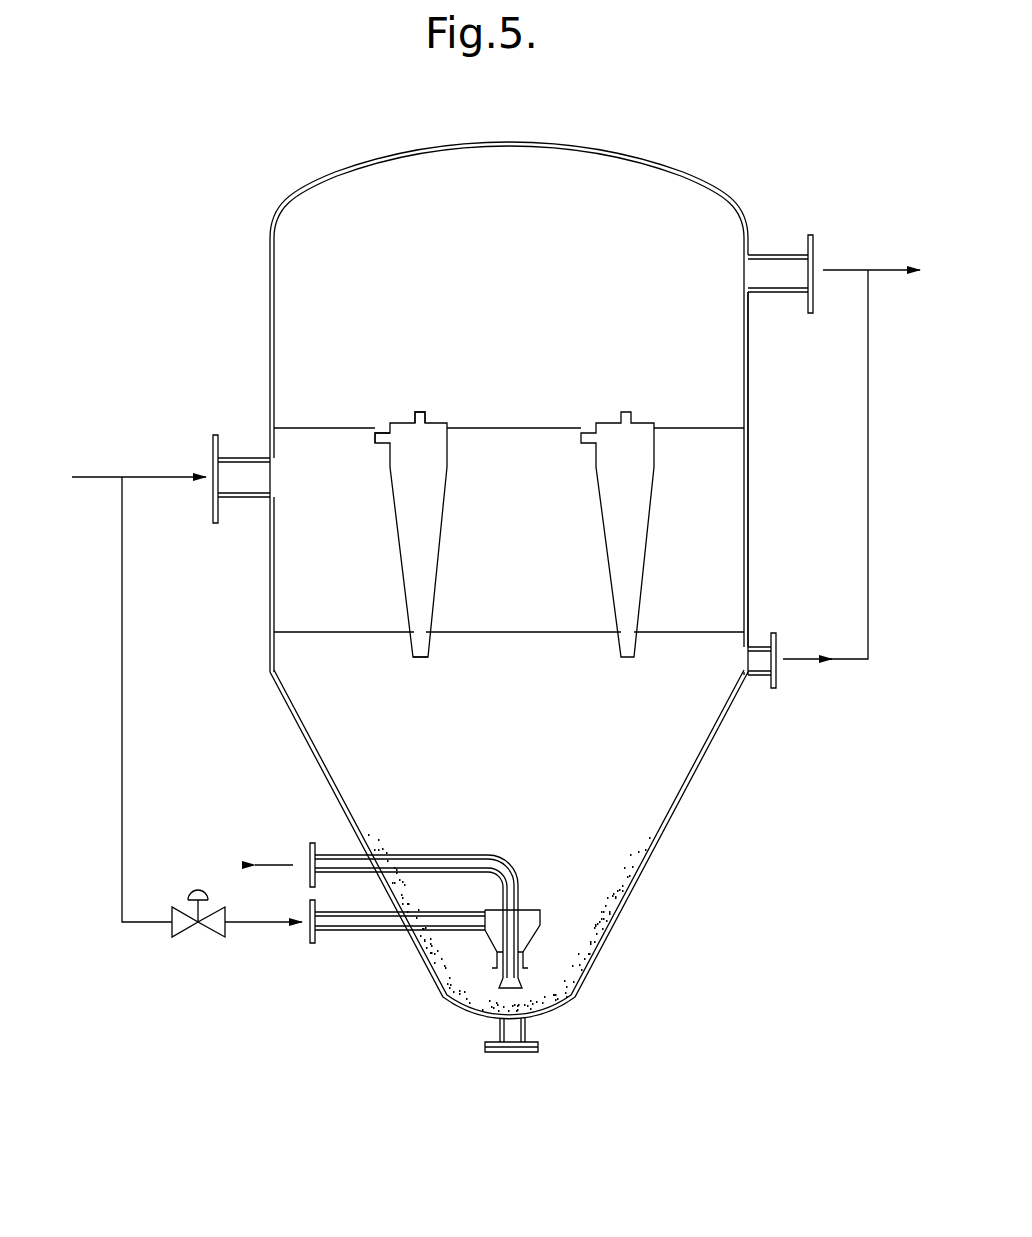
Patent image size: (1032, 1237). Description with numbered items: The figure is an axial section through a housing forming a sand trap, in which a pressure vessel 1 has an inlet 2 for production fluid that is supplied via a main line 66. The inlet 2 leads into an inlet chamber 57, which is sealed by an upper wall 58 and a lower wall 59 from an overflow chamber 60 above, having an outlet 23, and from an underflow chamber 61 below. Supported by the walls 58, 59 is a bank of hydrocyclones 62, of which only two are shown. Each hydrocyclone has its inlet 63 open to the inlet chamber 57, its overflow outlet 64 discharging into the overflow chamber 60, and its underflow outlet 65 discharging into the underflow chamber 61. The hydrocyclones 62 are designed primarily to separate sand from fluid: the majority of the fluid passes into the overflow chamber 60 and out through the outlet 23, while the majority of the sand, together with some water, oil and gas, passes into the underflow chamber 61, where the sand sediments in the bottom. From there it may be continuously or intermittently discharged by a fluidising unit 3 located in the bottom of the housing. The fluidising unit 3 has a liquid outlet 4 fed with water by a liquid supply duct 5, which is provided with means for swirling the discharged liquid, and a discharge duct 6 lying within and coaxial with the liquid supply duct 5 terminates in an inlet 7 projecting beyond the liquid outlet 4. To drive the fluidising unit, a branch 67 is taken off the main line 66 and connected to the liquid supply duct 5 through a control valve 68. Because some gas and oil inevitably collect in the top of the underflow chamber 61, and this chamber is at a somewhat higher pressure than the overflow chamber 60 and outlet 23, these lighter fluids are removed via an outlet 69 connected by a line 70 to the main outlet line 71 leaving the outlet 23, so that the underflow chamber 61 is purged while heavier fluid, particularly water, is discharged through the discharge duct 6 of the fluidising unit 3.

The pressure vessel 1 is at (541, 576).
The inlet 2 is at (212, 457).
The fluidising unit 3 is at (545, 918).
The liquid outlet 4 is at (522, 977).
The liquid supply duct 5 is at (358, 933).
The discharge duct 6 is at (408, 901).
The inlet 7 is at (500, 992).
The outlet 23 is at (775, 252).
The inlet chamber 57 is at (733, 548).
The wall 58 is at (318, 426).
The wall 59 is at (337, 634).
The overflow chamber 60 is at (506, 160).
The underflow chamber 61 is at (698, 765).
The hydrocyclones 62 is at (398, 497).
The inlet 63 is at (380, 438).
The overflow outlet 64 is at (425, 416).
The underflow outlet 65 is at (428, 660).
The main line 66 is at (160, 481).
The branch 67 is at (123, 745).
The control valve 68 is at (182, 928).
The outlet 69 is at (755, 678).
The line 70 is at (868, 588).
The main outlet line 71 is at (850, 268).